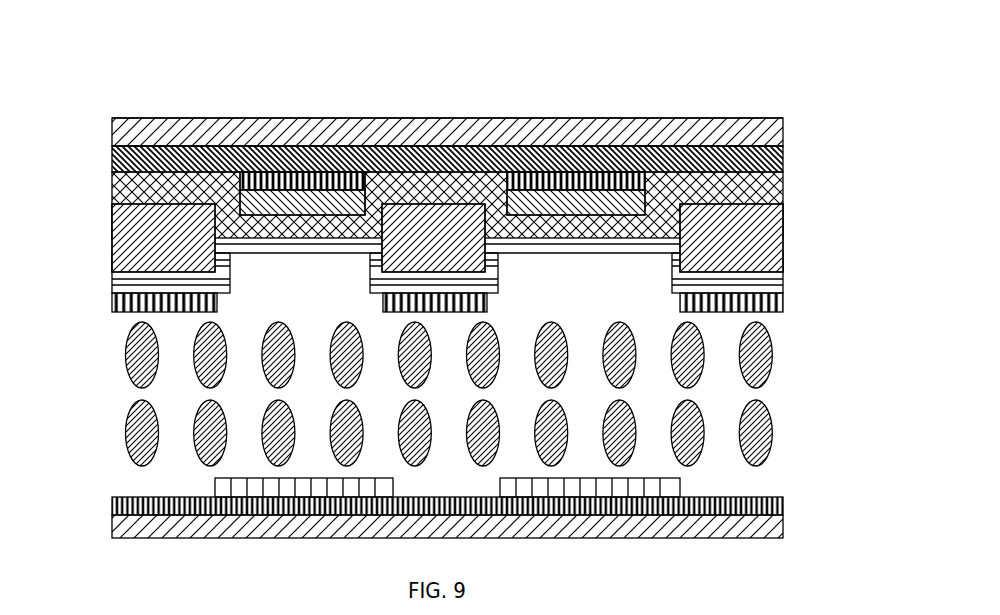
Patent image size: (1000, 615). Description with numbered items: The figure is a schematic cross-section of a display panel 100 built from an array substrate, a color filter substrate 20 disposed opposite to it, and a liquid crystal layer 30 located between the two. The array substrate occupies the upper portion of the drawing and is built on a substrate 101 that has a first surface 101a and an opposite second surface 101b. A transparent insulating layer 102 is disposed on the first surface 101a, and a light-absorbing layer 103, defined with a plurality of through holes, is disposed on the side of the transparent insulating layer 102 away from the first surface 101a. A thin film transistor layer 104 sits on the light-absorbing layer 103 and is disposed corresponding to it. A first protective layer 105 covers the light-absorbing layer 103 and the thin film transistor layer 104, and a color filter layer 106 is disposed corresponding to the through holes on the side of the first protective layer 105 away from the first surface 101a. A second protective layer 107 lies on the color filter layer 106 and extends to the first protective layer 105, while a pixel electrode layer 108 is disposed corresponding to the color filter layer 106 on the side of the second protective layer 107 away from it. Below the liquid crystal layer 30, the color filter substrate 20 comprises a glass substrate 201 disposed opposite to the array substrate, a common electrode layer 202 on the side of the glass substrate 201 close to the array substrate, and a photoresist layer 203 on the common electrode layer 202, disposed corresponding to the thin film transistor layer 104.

The display panel 100 is at (140, 91).
The substrate 101 is at (784, 128).
The first surface 101a is at (112, 153).
The second surface 101b is at (112, 126).
The transparent insulating layer 102 is at (784, 160).
The light-absorbing layer 103 is at (287, 168).
The thin film transistor layer 104 is at (567, 180).
The first protective layer 105 is at (784, 192).
The color filter layer 106 is at (784, 243).
The second protective layer 107 is at (784, 277).
The pixel electrode layer 108 is at (784, 307).
The liquid crystal layer 30 is at (772, 358).
The color filter substrate 20 is at (520, 498).
The glass substrate 201 is at (784, 532).
The common electrode layer 202 is at (784, 505).
The photoresist layer 203 is at (682, 486).